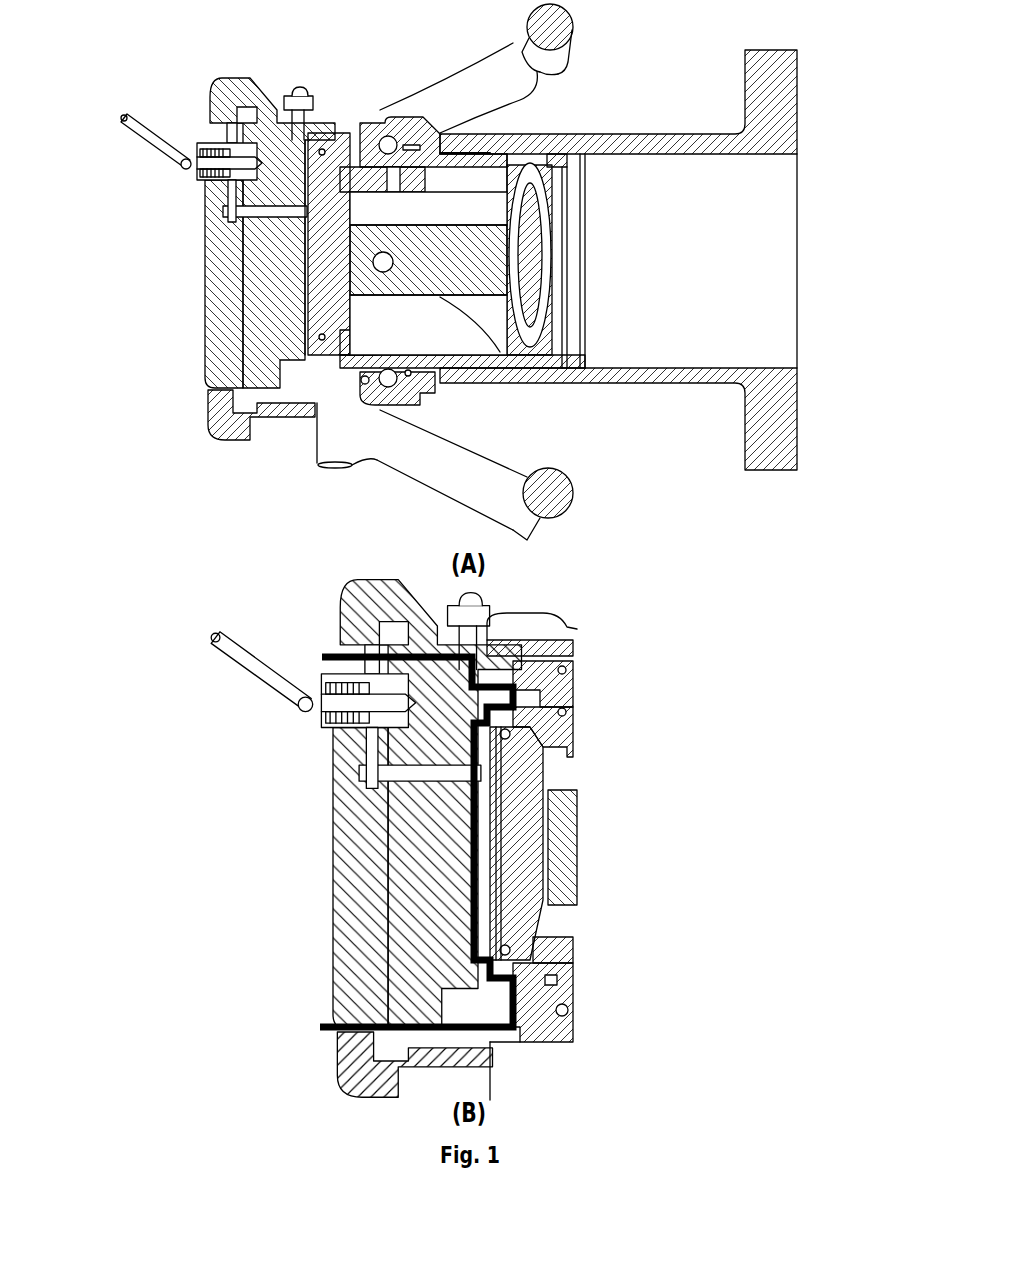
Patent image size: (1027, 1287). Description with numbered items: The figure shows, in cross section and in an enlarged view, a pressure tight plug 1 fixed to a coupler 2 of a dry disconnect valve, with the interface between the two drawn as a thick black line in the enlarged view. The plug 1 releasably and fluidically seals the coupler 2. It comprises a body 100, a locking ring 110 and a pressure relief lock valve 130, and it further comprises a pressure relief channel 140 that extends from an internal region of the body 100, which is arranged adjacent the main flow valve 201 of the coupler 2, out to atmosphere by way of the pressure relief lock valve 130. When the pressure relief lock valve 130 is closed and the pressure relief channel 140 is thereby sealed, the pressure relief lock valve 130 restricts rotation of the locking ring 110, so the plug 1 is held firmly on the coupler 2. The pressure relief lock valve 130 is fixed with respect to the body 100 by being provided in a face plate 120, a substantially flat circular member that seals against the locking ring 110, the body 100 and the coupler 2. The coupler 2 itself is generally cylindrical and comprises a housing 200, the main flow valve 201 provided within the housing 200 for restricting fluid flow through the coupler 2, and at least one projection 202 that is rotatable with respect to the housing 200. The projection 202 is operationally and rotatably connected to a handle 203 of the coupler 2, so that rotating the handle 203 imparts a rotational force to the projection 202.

In FIG. 1A, the pressure tight plug 1 is at (190, 362).
In FIG. 1B, the pressure tight plug 1 is at (310, 899).
In FIG. 1A, the coupler 2 is at (614, 398).
In FIG. 1B, the coupler 2 is at (558, 1058).
In FIG. 1A, the body 100 is at (294, 172).
In FIG. 1A, the locking ring 110 is at (277, 134).
In FIG. 1A, the face plate 120 is at (204, 342).
In FIG. 1A, the pressure relief lock valve 130 is at (190, 165).
In FIG. 1A, the pressure relief channel 140 is at (237, 217).
In FIG. 1A, the housing 200 is at (412, 383).
In FIG. 1A, the main flow valve 201 is at (330, 300).
In FIG. 1A, the projection 202 is at (314, 158).
In FIG. 1A, the handle 203 is at (522, 70).